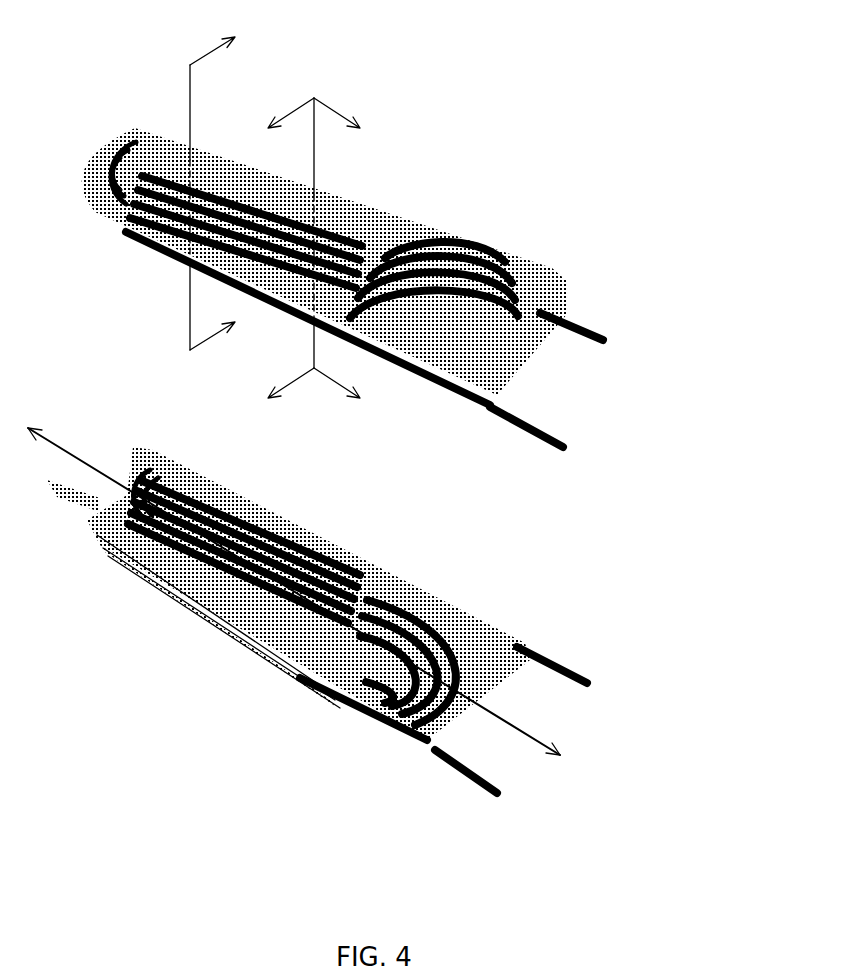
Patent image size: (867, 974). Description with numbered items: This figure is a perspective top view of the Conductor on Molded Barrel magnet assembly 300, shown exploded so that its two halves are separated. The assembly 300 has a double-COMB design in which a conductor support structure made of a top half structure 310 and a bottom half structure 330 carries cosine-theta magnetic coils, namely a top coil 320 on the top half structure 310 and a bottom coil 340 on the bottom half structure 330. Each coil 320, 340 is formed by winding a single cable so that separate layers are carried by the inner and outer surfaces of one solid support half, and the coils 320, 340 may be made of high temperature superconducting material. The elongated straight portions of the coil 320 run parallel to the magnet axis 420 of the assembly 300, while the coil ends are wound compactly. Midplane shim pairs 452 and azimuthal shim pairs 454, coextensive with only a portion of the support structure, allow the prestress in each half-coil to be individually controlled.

The COMB magnet assembly 300 is at (374, 400).
The top half structure 310 is at (347, 266).
The top coil 320 is at (562, 444).
The bottom half structure 330 is at (280, 593).
The bottom coil 340 is at (497, 790).
The magnet axis 420 is at (64, 443).
The midplane shim pair 452 is at (97, 511).
The azimuthal shim pair 454 is at (130, 207).